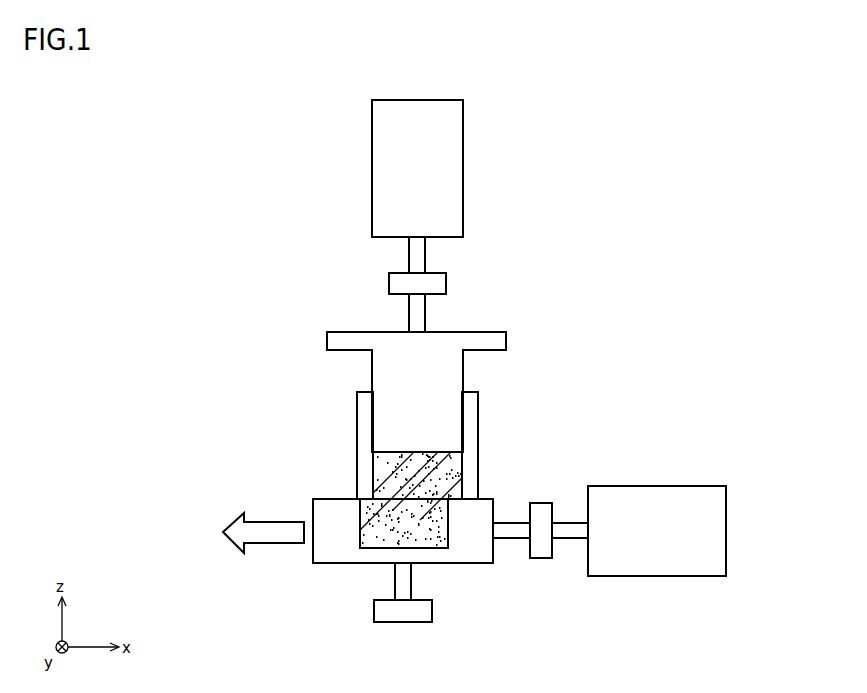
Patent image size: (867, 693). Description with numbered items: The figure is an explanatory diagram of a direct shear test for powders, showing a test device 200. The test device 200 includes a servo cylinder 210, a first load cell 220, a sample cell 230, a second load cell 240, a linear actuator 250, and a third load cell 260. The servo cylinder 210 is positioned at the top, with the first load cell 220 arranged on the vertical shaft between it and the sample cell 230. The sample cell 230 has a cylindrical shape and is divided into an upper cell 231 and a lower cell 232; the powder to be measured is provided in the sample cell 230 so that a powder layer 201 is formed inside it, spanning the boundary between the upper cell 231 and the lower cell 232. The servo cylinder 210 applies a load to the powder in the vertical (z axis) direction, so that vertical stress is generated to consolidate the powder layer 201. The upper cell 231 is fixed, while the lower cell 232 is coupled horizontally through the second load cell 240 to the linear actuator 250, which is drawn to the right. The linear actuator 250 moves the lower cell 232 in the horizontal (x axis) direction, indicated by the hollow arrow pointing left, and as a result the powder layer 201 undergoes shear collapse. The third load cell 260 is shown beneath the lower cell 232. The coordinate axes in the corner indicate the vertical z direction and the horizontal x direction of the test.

The test device 200 is at (234, 115).
The powder layer 201 is at (368, 535).
The servo cylinder 210 is at (465, 160).
The first load cell 220 is at (447, 287).
The sample cell 230 is at (256, 407).
The upper cell 231 is at (357, 417).
The lower cell 232 is at (347, 499).
The second load cell 240 is at (542, 503).
The linear actuator 250 is at (671, 486).
The third load cell 260 is at (433, 613).